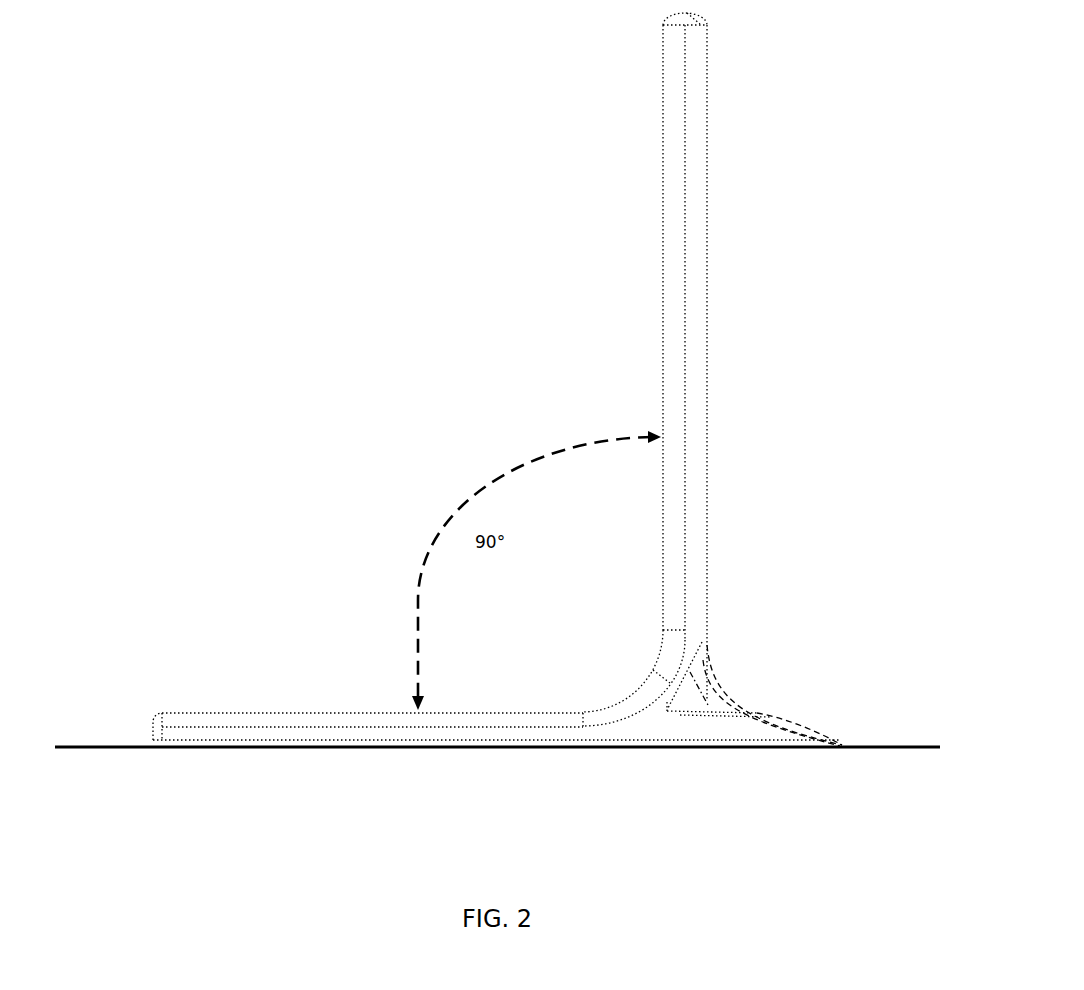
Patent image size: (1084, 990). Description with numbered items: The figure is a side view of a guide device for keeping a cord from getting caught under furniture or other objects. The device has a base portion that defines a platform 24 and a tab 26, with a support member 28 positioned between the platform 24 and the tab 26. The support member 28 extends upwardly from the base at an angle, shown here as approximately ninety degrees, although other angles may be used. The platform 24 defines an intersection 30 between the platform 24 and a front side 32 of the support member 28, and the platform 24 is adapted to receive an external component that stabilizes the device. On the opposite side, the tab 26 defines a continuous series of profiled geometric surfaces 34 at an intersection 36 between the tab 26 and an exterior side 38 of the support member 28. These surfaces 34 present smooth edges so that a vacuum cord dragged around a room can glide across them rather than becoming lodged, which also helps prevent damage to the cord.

The platform 24 is at (213, 735).
The tab 26 is at (807, 738).
The support member 28 is at (698, 124).
The intersection 30 is at (628, 663).
The front side 32 is at (663, 74).
The continuous series of profiled geometric surfaces 34 is at (718, 700).
The intersection 36 is at (740, 665).
The exterior side 38 is at (705, 315).